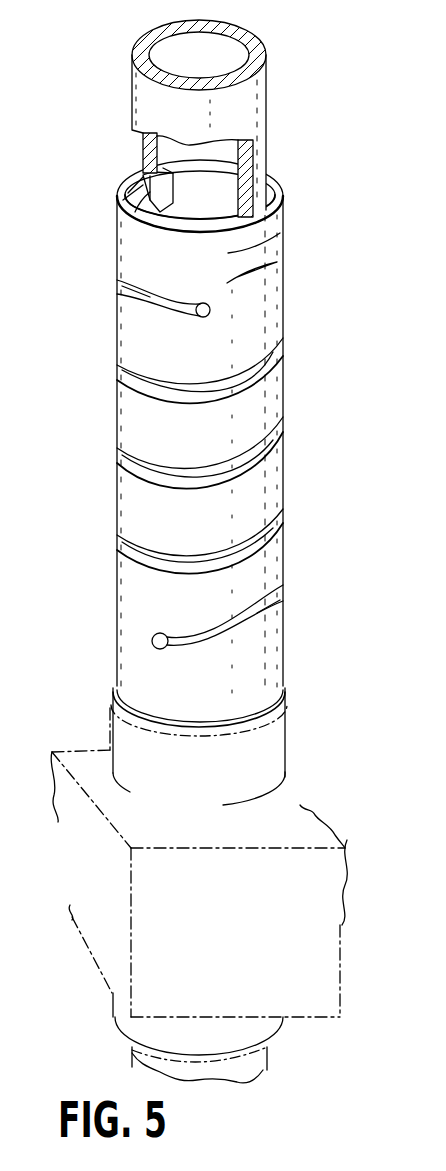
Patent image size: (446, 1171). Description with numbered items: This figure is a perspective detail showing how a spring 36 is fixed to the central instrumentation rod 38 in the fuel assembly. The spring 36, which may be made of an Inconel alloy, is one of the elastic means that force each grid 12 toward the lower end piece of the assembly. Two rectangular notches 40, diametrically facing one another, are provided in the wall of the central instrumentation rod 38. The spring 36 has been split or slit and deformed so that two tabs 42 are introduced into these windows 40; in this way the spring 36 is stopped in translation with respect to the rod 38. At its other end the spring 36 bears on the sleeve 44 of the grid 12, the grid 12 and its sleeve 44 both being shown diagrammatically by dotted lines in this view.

The grid 12 is at (52, 752).
The spring 36 is at (283, 467).
The central instrumentation rod 38 is at (243, 100).
The rectangular notch 40 is at (180, 182).
The tab 42 is at (135, 215).
The sleeve 44 is at (285, 740).